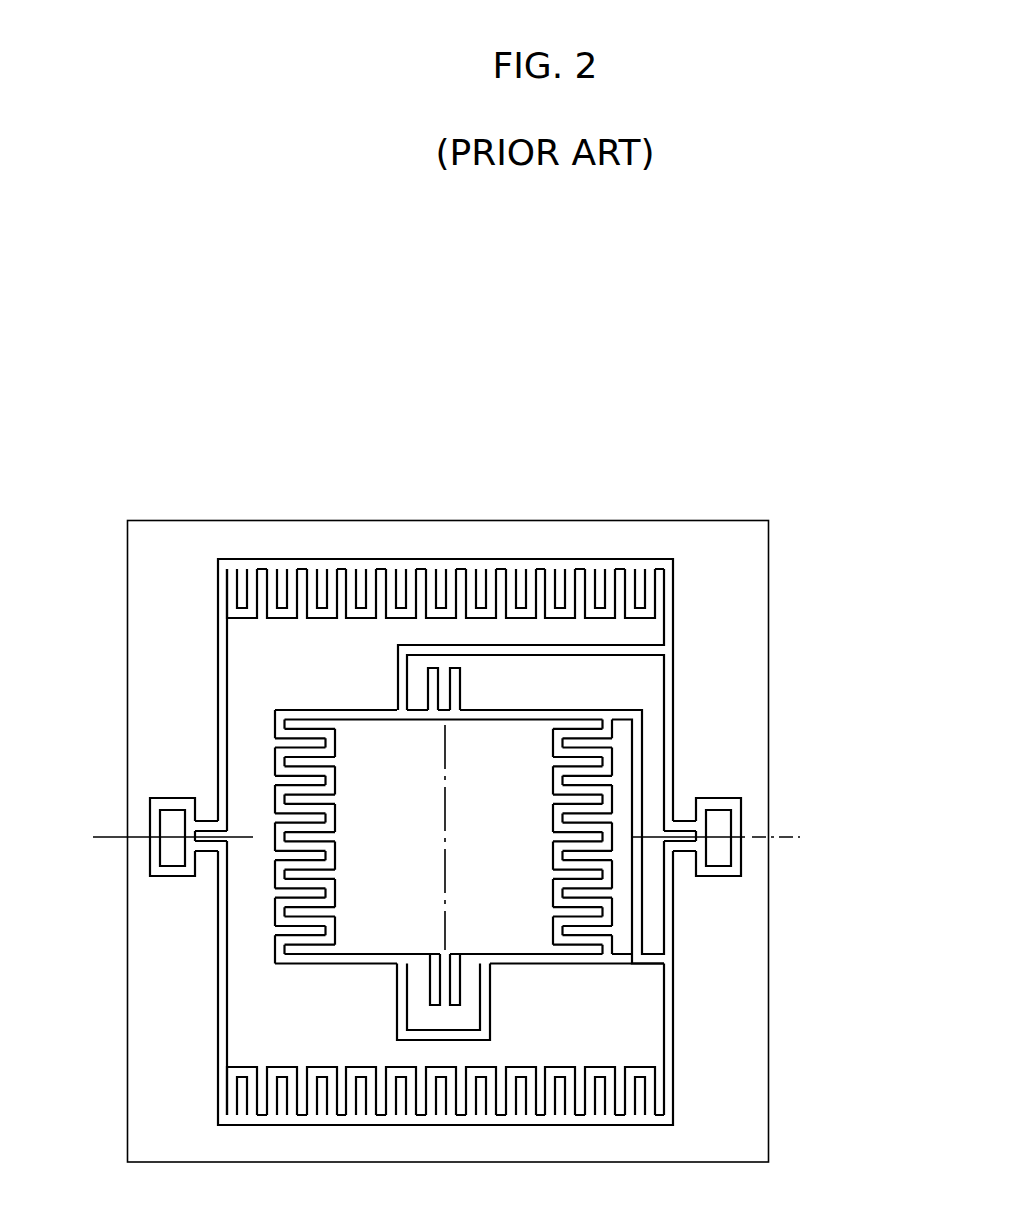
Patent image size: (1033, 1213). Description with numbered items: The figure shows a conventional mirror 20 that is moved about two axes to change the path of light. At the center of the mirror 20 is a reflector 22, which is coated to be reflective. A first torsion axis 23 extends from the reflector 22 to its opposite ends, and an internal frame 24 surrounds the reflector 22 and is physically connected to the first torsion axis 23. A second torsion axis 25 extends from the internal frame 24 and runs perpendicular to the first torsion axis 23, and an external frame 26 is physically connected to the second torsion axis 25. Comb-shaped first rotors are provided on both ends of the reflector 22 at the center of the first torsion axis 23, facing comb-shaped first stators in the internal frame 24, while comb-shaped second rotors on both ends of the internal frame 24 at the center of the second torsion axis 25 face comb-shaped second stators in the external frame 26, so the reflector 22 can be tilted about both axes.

The mirror 20 is at (106, 323).
The reflector 22 is at (510, 797).
The first torsion axis 23 is at (447, 757).
The internal frame 24 is at (337, 652).
The second torsion axis 25 is at (800, 837).
The external frame 26 is at (173, 540).